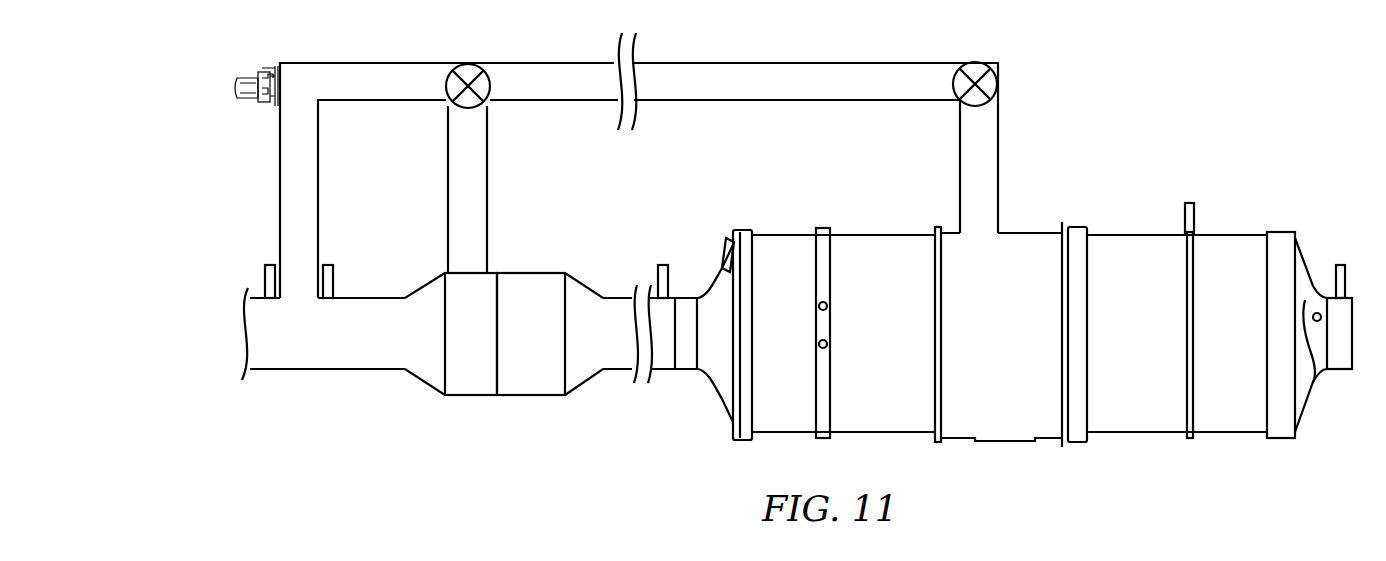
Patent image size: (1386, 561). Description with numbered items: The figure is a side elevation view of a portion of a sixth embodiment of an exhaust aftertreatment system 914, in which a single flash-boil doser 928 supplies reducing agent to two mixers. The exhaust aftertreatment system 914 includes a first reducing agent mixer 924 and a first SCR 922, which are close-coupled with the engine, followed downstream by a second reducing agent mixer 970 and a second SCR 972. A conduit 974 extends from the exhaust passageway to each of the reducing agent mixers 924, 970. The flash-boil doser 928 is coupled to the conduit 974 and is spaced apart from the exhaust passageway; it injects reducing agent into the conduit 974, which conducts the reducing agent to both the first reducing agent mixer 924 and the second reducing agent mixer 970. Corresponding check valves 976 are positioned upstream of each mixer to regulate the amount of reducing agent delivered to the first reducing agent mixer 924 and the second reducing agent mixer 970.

The exhaust aftertreatment system 914 is at (1290, 114).
The first SCR 922 is at (554, 265).
The first reducing agent mixer 924 is at (492, 263).
The flash-boil doser 928 is at (246, 59).
The second reducing agent mixer 970 is at (1025, 212).
The second SCR 972 is at (1132, 220).
The conduit 974 is at (276, 176).
The check valves 976 is at (474, 61).